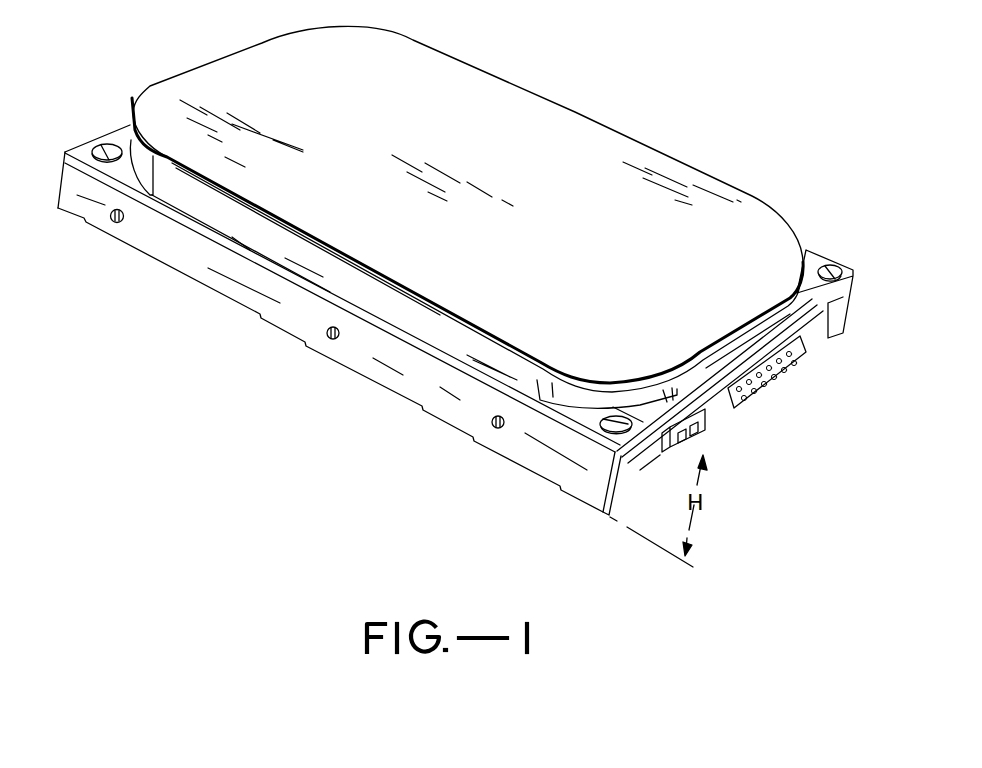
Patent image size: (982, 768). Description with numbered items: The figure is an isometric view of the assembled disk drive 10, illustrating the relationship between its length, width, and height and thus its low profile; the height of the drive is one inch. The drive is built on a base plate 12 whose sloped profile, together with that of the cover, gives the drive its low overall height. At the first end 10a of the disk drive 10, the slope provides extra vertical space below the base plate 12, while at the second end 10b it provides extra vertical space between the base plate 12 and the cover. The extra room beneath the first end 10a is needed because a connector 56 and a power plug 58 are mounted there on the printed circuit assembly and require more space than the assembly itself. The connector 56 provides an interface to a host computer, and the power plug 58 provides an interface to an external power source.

The disk drive 10 is at (461, 270).
The first end 10a is at (715, 400).
The second end 10b is at (162, 73).
The base plate 12 is at (453, 415).
The connector 56 is at (785, 366).
The power plug 58 is at (702, 428).